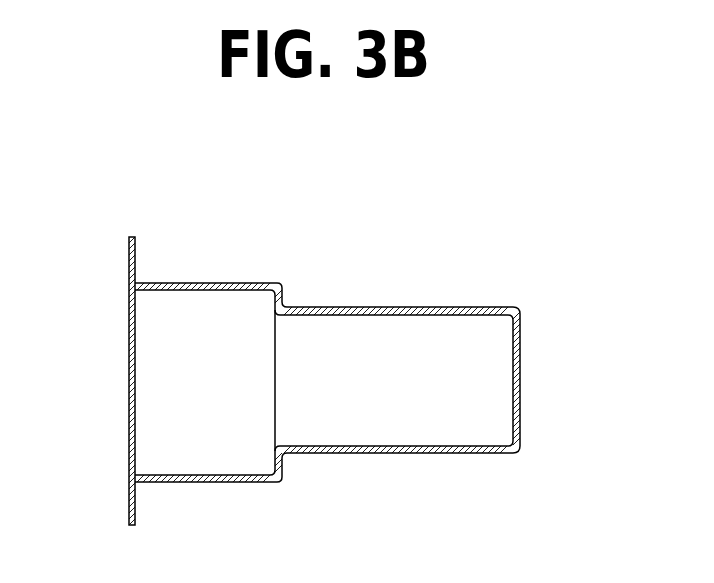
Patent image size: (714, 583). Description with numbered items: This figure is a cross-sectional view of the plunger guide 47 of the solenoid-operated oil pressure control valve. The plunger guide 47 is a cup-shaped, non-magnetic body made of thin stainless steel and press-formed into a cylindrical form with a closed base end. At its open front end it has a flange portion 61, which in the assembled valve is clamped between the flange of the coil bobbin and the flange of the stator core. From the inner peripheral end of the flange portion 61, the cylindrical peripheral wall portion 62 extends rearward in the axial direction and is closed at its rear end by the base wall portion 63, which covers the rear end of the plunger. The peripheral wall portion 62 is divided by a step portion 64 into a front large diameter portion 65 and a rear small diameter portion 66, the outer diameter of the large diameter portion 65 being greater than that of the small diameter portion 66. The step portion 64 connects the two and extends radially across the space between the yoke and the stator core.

The plunger guide 47 is at (550, 246).
The flange portion 61 is at (128, 245).
The cylindrical peripheral wall portion 62 is at (427, 192).
The base wall portion 63 is at (520, 387).
The step portion 64 is at (284, 292).
The large diameter portion 65 is at (222, 283).
The small diameter portion 66 is at (397, 307).